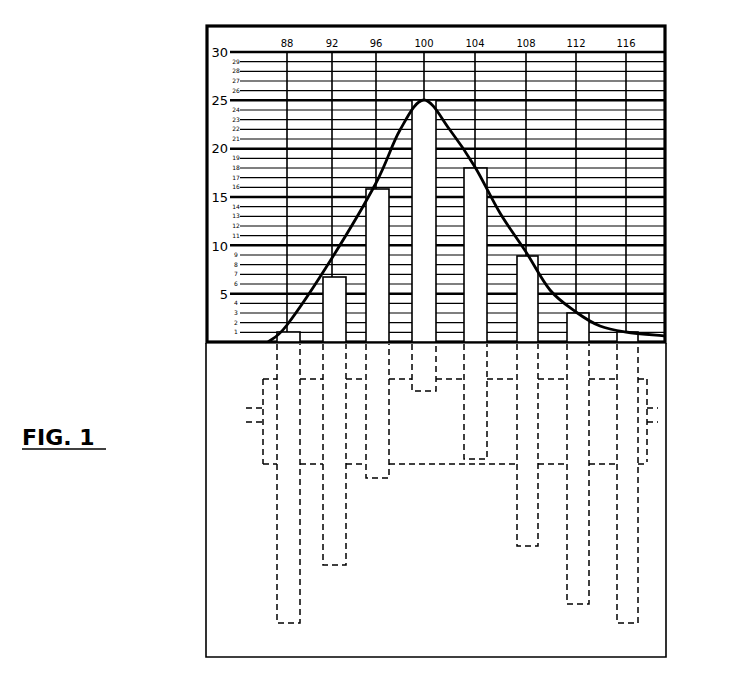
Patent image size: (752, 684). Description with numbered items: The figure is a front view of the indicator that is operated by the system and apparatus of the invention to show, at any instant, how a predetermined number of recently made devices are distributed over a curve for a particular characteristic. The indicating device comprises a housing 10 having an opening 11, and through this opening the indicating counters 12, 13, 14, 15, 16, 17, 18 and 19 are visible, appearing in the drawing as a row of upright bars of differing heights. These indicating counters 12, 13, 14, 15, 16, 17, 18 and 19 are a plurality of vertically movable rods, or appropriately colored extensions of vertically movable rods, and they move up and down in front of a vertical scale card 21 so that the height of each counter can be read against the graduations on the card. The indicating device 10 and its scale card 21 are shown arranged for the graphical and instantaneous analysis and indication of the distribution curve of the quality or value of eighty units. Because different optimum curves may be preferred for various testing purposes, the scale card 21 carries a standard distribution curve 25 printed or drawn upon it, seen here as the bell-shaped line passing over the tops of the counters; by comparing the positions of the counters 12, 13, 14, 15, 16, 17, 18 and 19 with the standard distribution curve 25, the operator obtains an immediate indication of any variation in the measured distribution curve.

The housing 10 is at (667, 389).
The opening 11 is at (650, 44).
The indicating counter 12 is at (273, 343).
The indicating counter 13 is at (332, 285).
The indicating counter 14 is at (377, 236).
The indicating counter 15 is at (436, 164).
The indicating counter 16 is at (477, 235).
The indicating counter 17 is at (525, 256).
The indicating counter 18 is at (573, 323).
The indicating counter 19 is at (630, 335).
The vertical scale card 21 is at (663, 53).
The standard distribution curve 25 is at (495, 212).